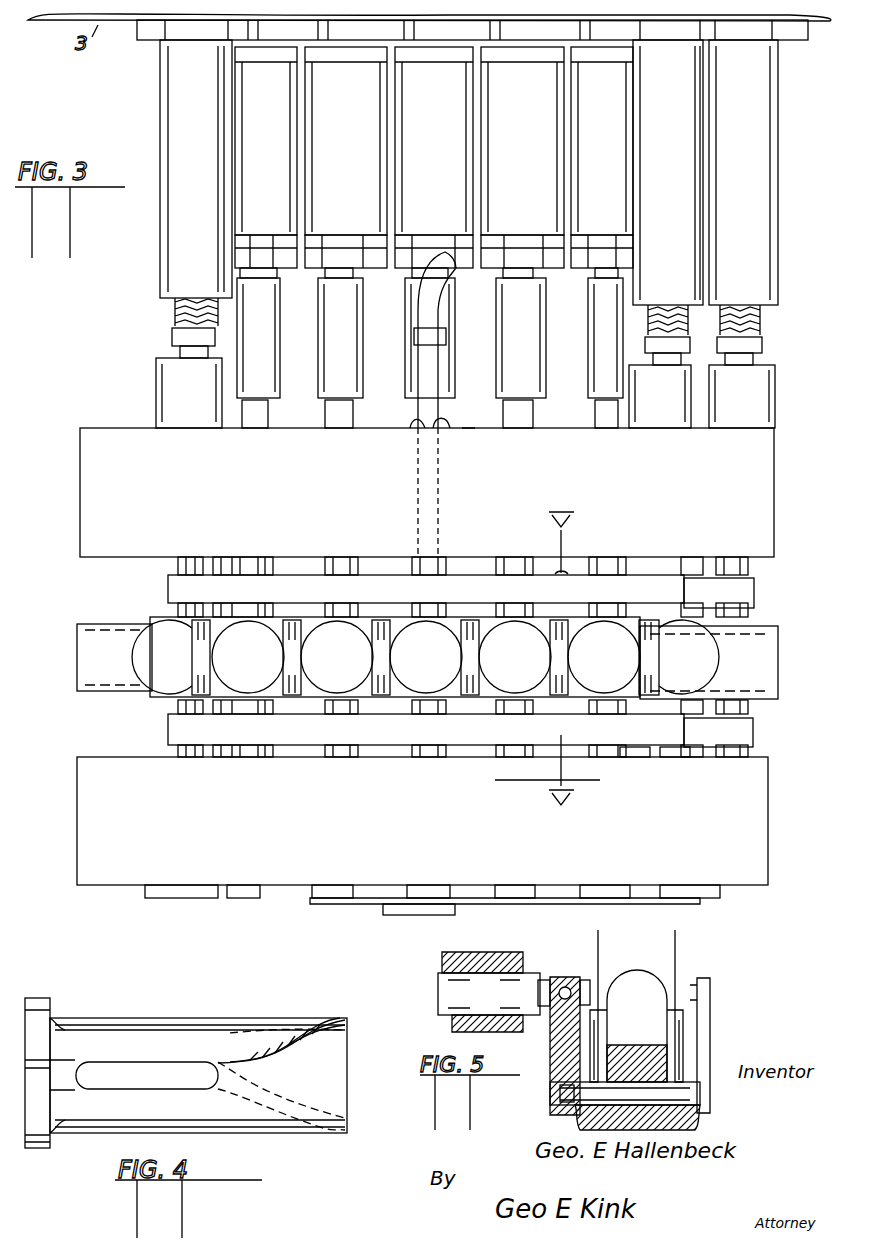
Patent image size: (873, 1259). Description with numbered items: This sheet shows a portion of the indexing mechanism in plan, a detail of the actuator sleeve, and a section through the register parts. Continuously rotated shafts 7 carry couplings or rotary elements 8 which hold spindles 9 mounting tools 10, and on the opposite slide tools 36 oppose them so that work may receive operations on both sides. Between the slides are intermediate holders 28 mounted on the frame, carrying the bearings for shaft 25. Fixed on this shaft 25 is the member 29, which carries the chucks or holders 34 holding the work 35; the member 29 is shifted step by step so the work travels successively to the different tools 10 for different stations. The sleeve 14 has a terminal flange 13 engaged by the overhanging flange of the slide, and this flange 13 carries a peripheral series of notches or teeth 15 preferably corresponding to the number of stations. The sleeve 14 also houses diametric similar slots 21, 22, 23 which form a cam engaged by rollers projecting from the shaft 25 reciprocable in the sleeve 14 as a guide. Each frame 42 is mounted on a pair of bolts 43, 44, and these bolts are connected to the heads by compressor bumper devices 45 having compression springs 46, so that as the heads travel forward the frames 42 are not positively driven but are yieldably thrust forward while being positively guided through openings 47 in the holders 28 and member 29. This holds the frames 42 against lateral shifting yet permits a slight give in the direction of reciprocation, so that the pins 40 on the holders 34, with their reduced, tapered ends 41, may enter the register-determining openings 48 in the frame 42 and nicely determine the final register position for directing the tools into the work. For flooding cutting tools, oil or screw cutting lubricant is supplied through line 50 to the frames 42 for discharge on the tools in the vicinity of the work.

In FIG. 3, the shaft 7 is at (415, 228).
In FIG. 3, the rotary element 8 is at (304, 268).
In FIG. 3, the spindle 9 is at (318, 333).
In FIG. 3, the tool 10 is at (470, 428).
In FIG. 4, the terminal flange 13 is at (50, 1005).
In FIG. 4, the sleeve 14 is at (170, 1002).
In FIG. 4, the notch 15 is at (50, 1068).
In FIG. 4, the slot 21 is at (142, 1057).
In FIG. 4, the slot 22 is at (245, 1065).
In FIG. 4, the slot 23 is at (322, 1020).
In FIG. 3, the shaft 25 is at (383, 908).
In FIG. 3, the intermediate holder 28 is at (100, 500).
In FIG. 5, the intermediate holder 28 is at (440, 950).
In FIG. 3, the member 29 is at (204, 650).
In FIG. 3, the holder 34 is at (192, 675).
In FIG. 5, the holder 34 is at (648, 1035).
In FIG. 3, the work 35 is at (325, 680).
In FIG. 3, the tool 36 is at (680, 757).
In FIG. 3, the pin 40 is at (306, 598).
In FIG. 5, the pin 40 is at (552, 1090).
In FIG. 3, the reduced end 41 is at (290, 572).
In FIG. 5, the reduced end 41 is at (558, 1100).
In FIG. 3, the frame 42 is at (754, 596).
In FIG. 5, the frame 42 is at (550, 1043).
In FIG. 3, the bolt 43 is at (748, 610).
In FIG. 3, the bolt 44 is at (178, 608).
In FIG. 3, the compressor bumper device 45 is at (165, 262).
In FIG. 3, the compression spring 46 is at (175, 316).
In FIG. 5, the opening 47 is at (532, 975).
In FIG. 5, the register-determining opening 48 is at (555, 1110).
In FIG. 3, the line 50 is at (440, 372).